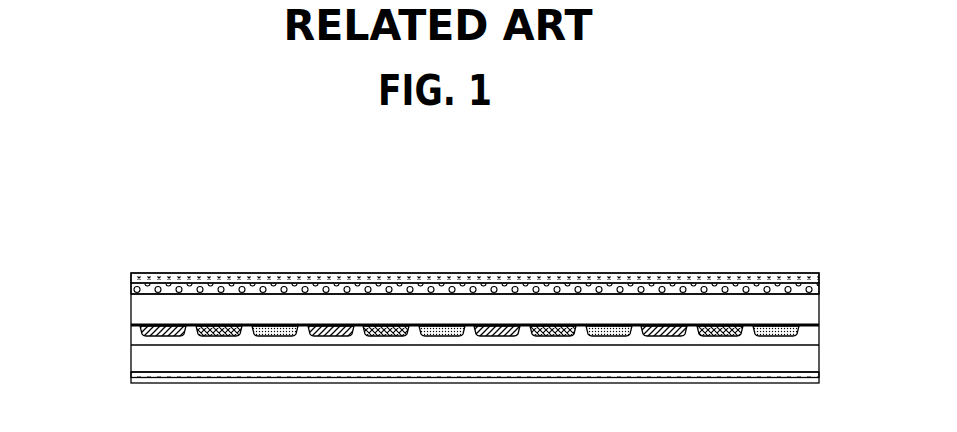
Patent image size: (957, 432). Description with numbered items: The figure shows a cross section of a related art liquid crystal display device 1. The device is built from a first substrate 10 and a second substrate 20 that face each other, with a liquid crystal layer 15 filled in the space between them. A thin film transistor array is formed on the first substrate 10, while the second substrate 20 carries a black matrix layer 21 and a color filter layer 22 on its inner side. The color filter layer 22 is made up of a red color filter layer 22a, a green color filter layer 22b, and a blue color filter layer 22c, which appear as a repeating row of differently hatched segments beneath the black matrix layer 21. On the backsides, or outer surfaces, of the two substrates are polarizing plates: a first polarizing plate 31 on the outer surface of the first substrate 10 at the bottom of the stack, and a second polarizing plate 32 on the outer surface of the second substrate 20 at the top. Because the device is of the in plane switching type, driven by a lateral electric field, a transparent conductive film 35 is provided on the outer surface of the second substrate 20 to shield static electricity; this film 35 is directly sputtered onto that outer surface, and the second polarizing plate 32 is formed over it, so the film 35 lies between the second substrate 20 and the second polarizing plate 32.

The liquid crystal display device 1 is at (827, 274).
The first substrate 10 is at (134, 358).
The liquid crystal layer 15 is at (333, 337).
The second substrate 20 is at (134, 313).
The black matrix layer 21 is at (139, 323).
The color filter layer 22 is at (469, 262).
The red color filter layer 22a is at (170, 325).
The green color filter layer 22b is at (226, 325).
The blue color filter layer 22c is at (279, 286).
The first polarizing plate 31 is at (132, 375).
The second polarizing plate 32 is at (131, 276).
The transparent conductive film 35 is at (131, 290).